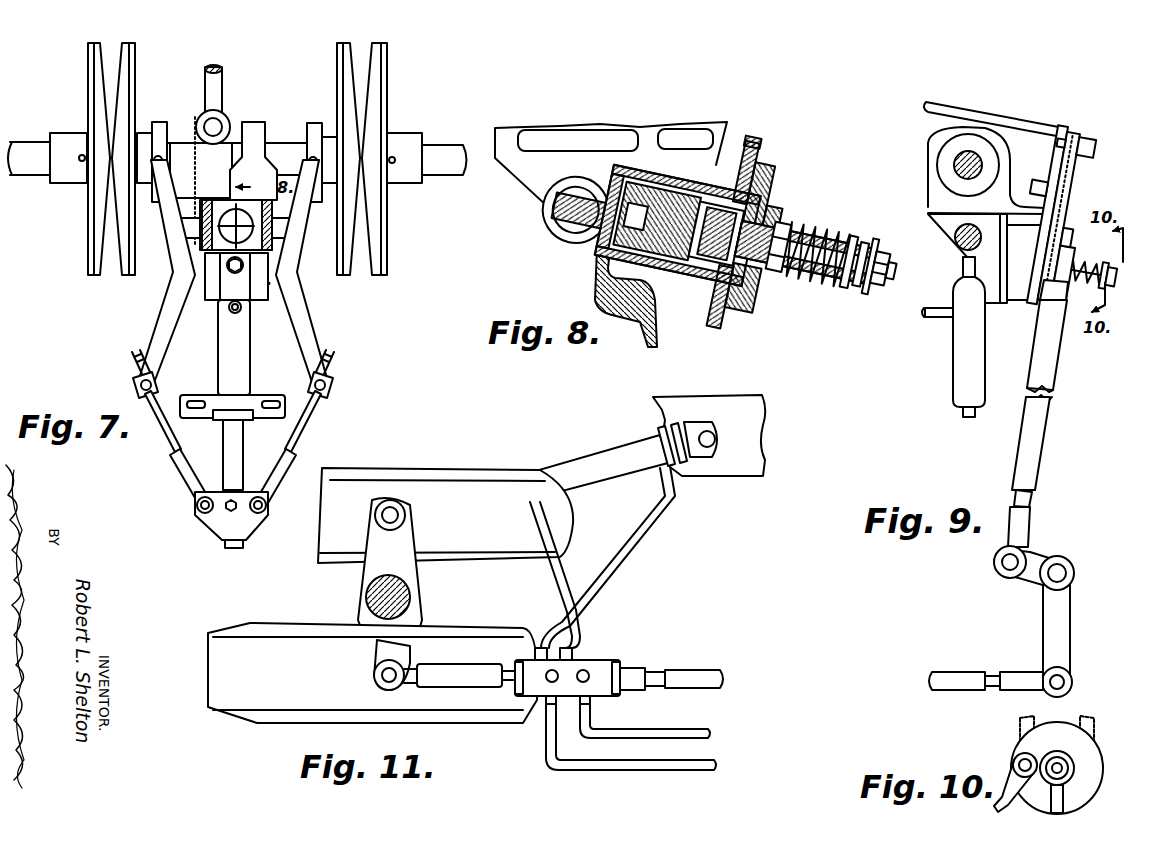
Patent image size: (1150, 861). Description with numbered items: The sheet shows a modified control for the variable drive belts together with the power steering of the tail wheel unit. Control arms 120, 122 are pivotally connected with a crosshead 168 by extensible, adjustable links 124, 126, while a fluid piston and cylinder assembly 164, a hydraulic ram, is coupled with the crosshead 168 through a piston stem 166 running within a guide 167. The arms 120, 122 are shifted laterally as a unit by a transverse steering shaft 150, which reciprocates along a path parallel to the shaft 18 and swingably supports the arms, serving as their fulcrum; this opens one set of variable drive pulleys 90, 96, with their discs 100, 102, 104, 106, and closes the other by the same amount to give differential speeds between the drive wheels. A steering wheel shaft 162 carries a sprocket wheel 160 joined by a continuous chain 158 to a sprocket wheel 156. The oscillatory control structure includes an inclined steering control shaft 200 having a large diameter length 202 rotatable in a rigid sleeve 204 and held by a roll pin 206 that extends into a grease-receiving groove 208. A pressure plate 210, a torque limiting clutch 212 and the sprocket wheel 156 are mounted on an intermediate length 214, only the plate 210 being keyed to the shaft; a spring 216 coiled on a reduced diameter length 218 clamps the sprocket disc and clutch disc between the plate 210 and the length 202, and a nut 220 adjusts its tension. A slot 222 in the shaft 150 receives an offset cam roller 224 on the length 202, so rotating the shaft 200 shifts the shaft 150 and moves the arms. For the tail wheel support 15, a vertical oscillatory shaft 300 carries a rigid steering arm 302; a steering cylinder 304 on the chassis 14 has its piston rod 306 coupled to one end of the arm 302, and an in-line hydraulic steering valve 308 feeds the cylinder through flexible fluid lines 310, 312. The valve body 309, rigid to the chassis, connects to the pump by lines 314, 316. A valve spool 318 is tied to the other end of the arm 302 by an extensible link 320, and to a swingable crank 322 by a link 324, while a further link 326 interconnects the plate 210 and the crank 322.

In FIG. 7, the shaft 18 is at (22, 168).
In FIG. 9, the shaft 18 is at (952, 166).
In FIG. 7, the variable drive pulley 90 is at (392, 112).
In FIG. 7, the variable drive pulley 96 is at (85, 80).
In FIG. 7, the pulley disc 100 is at (383, 76).
In FIG. 7, the pulley disc 102 is at (93, 100).
In FIG. 7, the pulley disc 104 is at (340, 70).
In FIG. 7, the pulley disc 106 is at (132, 80).
In FIG. 7, the continuous chain 158 is at (198, 132).
In FIG. 9, the continuous chain 158 is at (1078, 180).
In FIG. 10, the continuous chain 158 is at (1092, 726).
In FIG. 9, the sprocket wheel 160 is at (1085, 136).
In FIG. 7, the steering wheel shaft 162 is at (217, 101).
In FIG. 9, the steering wheel shaft 162 is at (980, 115).
In FIG. 7, the fluid piston and cylinder assembly 164 is at (262, 318).
In FIG. 9, the fluid piston and cylinder assembly 164 is at (950, 392).
In FIG. 7, the piston stem 166 is at (233, 448).
In FIG. 9, the piston stem 166 is at (963, 416).
In FIG. 7, the guide 167 is at (222, 420).
In FIG. 7, the transverse steering shaft 150 is at (175, 239).
In FIG. 8, the transverse steering shaft 150 is at (556, 222).
In FIG. 9, the transverse steering shaft 150 is at (955, 243).
In FIG. 8, the sprocket wheel 156 is at (768, 160).
In FIG. 7, the control arm 120 is at (303, 334).
In FIG. 7, the control arm 122 is at (168, 326).
In FIG. 7, the extensible link 124 is at (290, 451).
In FIG. 7, the extensible link 126 is at (176, 454).
In FIG. 7, the crosshead 168 is at (212, 523).
In FIG. 8, the steering control shaft 200 is at (880, 288).
In FIG. 9, the steering control shaft 200 is at (1095, 283).
In FIG. 10, the steering control shaft 200 is at (1066, 766).
In FIG. 7, the shaft length of large diameter 202 is at (246, 222).
In FIG. 8, the shaft length of large diameter 202 is at (676, 172).
In FIG. 8, the rigid sleeve 204 is at (708, 186).
In FIG. 9, the rigid sleeve 204 is at (1024, 296).
In FIG. 8, the roll pin 206 is at (745, 166).
In FIG. 8, the grease-receiving groove 208 is at (690, 266).
In FIG. 8, the pressure plate 210 is at (775, 180).
In FIG. 9, the pressure plate 210 is at (1070, 240).
In FIG. 10, the pressure plate 210 is at (1082, 775).
In FIG. 8, the torque limiting clutch 212 is at (722, 313).
In FIG. 9, the torque limiting clutch 212 is at (1036, 318).
In FIG. 8, the intermediate length 214 is at (772, 221).
In FIG. 8, the spring 216 is at (802, 279).
In FIG. 9, the spring 216 is at (1090, 258).
In FIG. 8, the reduced diameter length 218 is at (808, 252).
In FIG. 8, the nut 220 is at (852, 296).
In FIG. 7, the slot 222 is at (209, 300).
In FIG. 8, the slot 222 is at (570, 240).
In FIG. 8, the offset cam roller 224 is at (603, 188).
In FIG. 11, the chassis 14 is at (750, 428).
In FIG. 11, the tail wheel support 15 is at (206, 690).
In FIG. 11, the oscillatory shaft 300 is at (411, 598).
In FIG. 11, the steering arm 302 is at (378, 648).
In FIG. 11, the steering cylinder 304 is at (570, 462).
In FIG. 11, the piston rod 306 is at (467, 500).
In FIG. 11, the hydraulic steering valve 308 is at (588, 660).
In FIG. 11, the valve body 309 is at (608, 670).
In FIG. 11, the flexible fluid line 310 is at (560, 573).
In FIG. 11, the flexible fluid line 312 is at (600, 574).
In FIG. 11, the flexible fluid line 314 is at (648, 740).
In FIG. 11, the flexible fluid line 316 is at (628, 772).
In FIG. 11, the valve spool 318 is at (505, 688).
In FIG. 11, the extensible link 320 is at (430, 688).
In FIG. 9, the swingable crank 322 is at (1062, 632).
In FIG. 9, the extensible link 324 is at (945, 685).
In FIG. 11, the extensible link 324 is at (700, 686).
In FIG. 9, the extensible link 326 is at (1033, 455).
In FIG. 10, the extensible link 326 is at (1005, 810).